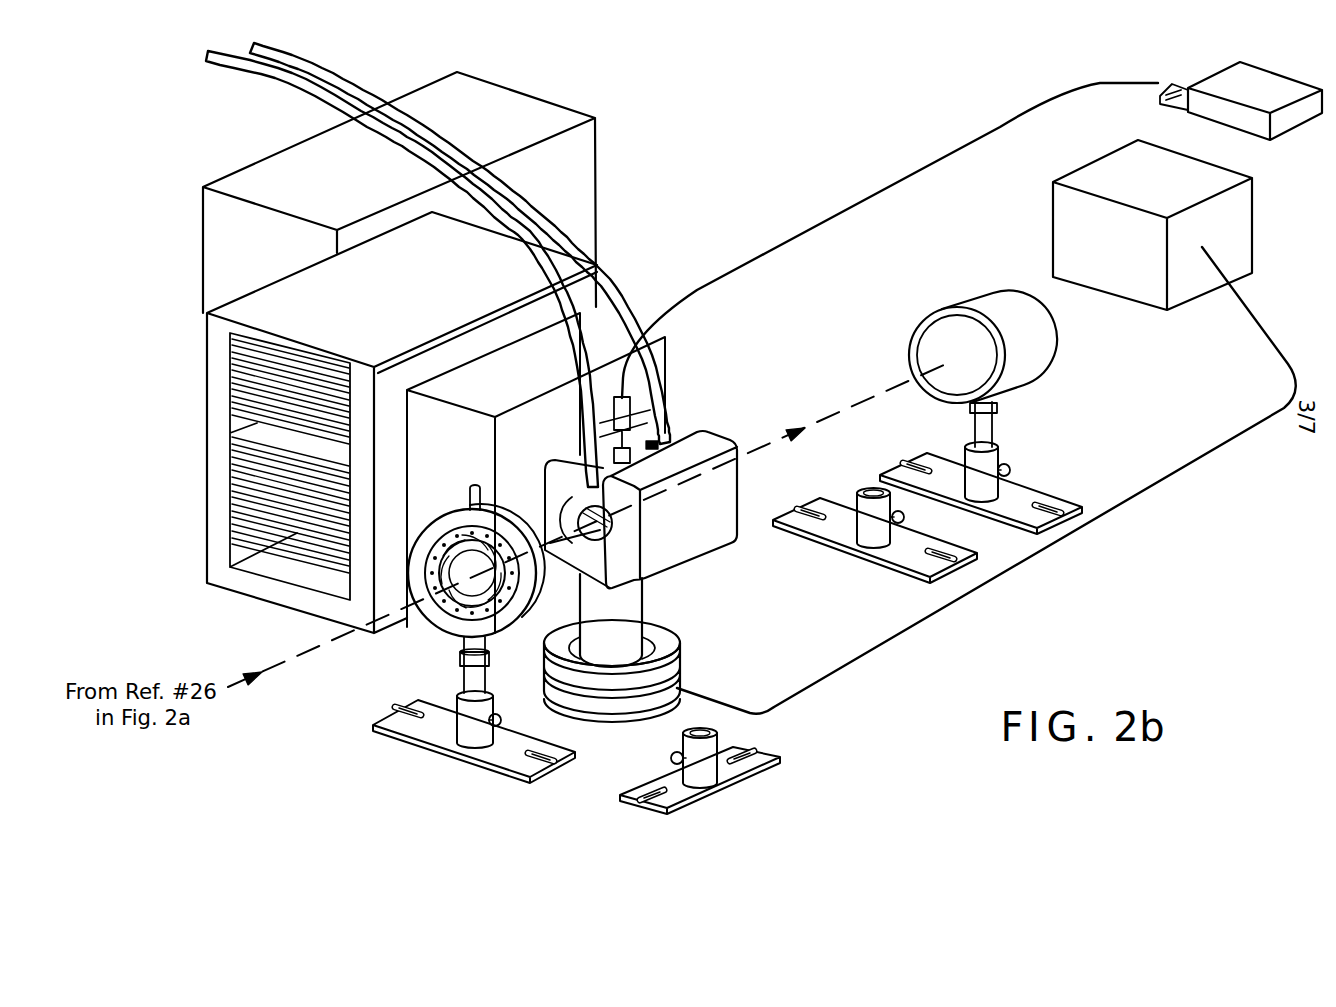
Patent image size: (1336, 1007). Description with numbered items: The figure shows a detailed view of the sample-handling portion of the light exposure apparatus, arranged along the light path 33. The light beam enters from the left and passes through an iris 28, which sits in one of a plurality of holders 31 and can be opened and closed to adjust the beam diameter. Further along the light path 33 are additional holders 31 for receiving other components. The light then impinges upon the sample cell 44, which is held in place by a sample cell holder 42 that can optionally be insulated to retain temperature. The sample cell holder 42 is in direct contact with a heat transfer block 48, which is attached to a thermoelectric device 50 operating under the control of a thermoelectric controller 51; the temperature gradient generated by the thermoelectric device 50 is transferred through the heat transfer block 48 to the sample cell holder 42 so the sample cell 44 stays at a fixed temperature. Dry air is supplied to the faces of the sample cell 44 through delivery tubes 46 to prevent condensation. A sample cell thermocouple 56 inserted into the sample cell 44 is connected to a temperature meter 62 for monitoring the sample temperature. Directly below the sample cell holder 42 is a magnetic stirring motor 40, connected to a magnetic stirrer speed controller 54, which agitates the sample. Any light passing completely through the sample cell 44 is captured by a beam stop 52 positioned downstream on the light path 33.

The iris 28 is at (467, 577).
The holders 31 is at (503, 755).
The light path 33 is at (838, 412).
The magnetic stirring motor 40 is at (677, 657).
The sample cell holder 42 is at (703, 533).
The sample cell 44 is at (613, 533).
The delivery tubes 46 is at (305, 78).
The heat transfer block 48 is at (594, 318).
The thermoelectric device 50 is at (207, 498).
The thermoelectric controller 51 is at (494, 94).
The beam stop 52 is at (1037, 345).
The magnetic stirrer speed controller 54 is at (1168, 165).
The sample cell thermocouple 56 is at (866, 200).
The temperature meter 62 is at (1232, 78).